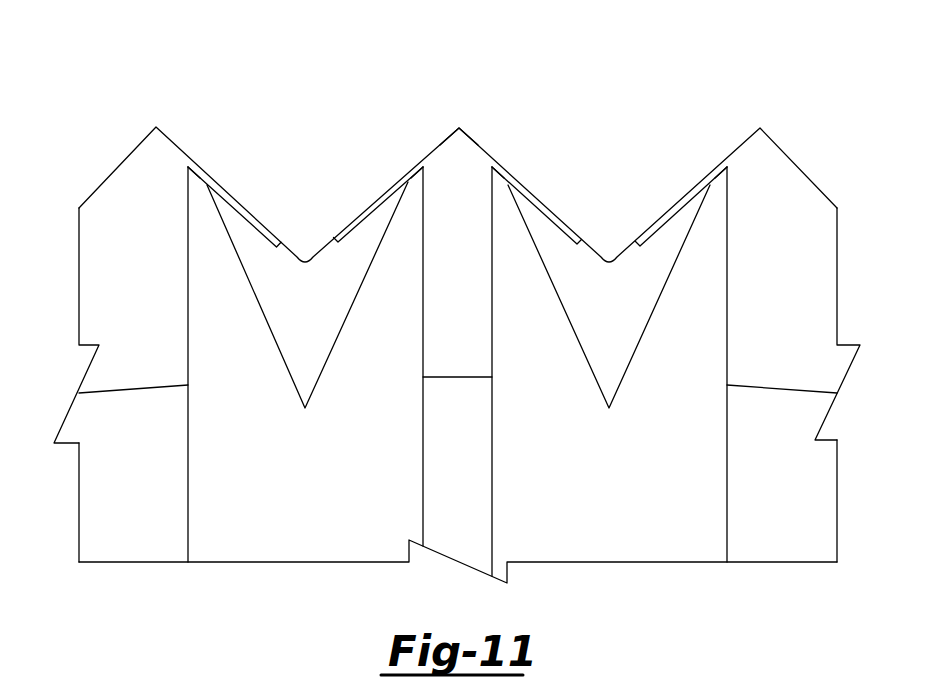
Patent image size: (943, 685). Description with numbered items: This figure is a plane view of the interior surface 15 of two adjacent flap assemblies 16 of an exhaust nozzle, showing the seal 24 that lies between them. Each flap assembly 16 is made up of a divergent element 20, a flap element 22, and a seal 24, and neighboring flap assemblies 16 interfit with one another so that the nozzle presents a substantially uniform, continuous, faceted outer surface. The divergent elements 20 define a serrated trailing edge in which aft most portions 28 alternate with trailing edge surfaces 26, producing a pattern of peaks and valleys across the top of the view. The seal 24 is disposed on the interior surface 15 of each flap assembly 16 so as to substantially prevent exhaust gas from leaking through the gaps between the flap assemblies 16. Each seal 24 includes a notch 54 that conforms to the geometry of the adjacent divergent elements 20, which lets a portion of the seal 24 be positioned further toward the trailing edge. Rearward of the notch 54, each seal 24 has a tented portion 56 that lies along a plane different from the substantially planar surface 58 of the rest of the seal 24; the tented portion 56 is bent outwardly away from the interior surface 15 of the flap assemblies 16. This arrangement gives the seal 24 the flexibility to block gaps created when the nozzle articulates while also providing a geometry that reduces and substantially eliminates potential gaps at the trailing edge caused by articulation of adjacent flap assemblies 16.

The interior surface 15 is at (453, 342).
The flap assembly 16 is at (90, 148).
The divergent element 20 is at (122, 300).
The flap element 22 is at (123, 485).
The seal 24 is at (295, 516).
The trailing edge surface 26 is at (190, 153).
The aft most portion 28 is at (459, 128).
The notch 54 is at (305, 243).
The tented portion 56 is at (292, 338).
The substantially planar surface 58 is at (230, 532).